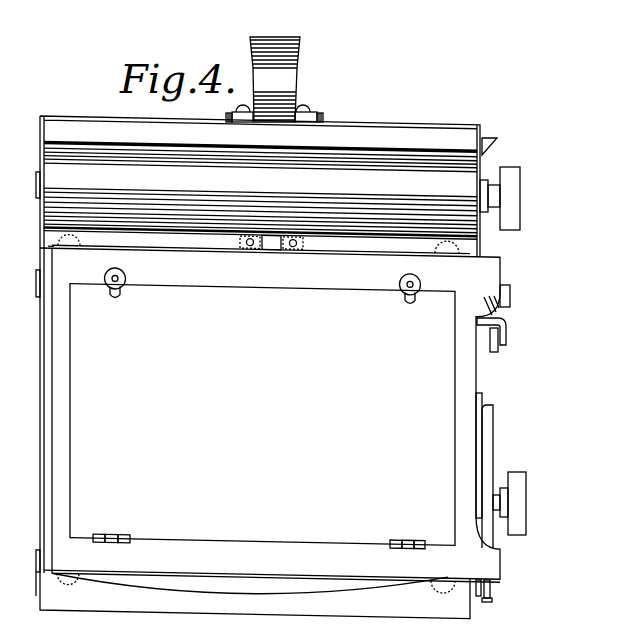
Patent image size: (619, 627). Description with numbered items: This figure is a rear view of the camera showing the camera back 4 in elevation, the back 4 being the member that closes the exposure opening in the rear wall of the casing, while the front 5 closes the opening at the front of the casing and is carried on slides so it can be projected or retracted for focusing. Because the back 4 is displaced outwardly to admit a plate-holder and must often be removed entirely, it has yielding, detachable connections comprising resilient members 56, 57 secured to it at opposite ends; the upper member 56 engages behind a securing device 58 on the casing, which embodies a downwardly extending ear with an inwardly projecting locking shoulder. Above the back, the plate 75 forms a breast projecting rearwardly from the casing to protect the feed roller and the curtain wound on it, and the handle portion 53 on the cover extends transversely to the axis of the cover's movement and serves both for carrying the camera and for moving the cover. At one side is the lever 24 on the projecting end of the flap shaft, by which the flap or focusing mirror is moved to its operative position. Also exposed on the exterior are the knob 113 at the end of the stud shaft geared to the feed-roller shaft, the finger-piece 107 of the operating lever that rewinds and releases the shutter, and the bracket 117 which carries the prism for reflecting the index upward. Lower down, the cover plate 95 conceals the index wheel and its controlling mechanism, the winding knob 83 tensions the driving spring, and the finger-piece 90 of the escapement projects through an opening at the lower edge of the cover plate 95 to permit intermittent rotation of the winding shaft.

The back 4 is at (270, 415).
The front 5 is at (50, 247).
The lever 24 is at (497, 350).
The handle portion 53 is at (283, 46).
The resilient member 56 is at (247, 242).
The resilient member 57 is at (253, 583).
The securing device 58 is at (270, 251).
The plate 75 is at (260, 191).
The winding knob 83 is at (518, 500).
The finger-piece 90 is at (490, 599).
The cover plate 95 is at (494, 447).
The finger-piece 107 is at (505, 333).
The knob 113 is at (510, 206).
The bracket 117 is at (495, 147).